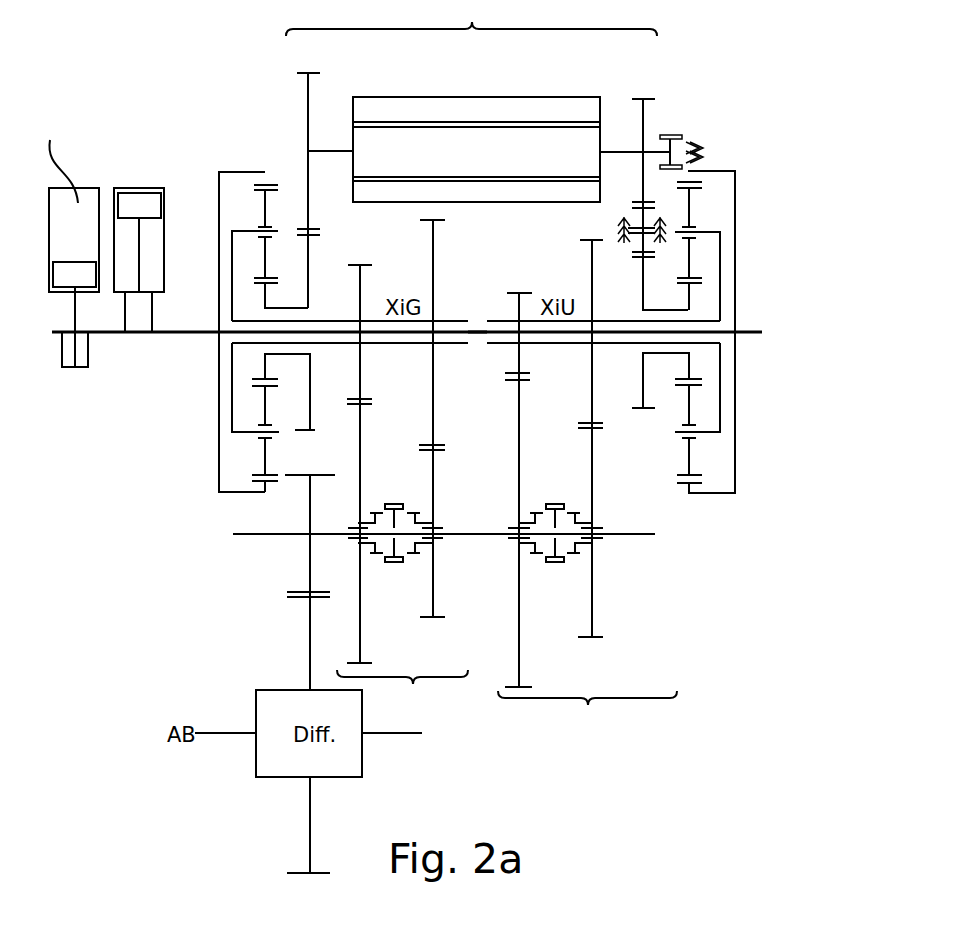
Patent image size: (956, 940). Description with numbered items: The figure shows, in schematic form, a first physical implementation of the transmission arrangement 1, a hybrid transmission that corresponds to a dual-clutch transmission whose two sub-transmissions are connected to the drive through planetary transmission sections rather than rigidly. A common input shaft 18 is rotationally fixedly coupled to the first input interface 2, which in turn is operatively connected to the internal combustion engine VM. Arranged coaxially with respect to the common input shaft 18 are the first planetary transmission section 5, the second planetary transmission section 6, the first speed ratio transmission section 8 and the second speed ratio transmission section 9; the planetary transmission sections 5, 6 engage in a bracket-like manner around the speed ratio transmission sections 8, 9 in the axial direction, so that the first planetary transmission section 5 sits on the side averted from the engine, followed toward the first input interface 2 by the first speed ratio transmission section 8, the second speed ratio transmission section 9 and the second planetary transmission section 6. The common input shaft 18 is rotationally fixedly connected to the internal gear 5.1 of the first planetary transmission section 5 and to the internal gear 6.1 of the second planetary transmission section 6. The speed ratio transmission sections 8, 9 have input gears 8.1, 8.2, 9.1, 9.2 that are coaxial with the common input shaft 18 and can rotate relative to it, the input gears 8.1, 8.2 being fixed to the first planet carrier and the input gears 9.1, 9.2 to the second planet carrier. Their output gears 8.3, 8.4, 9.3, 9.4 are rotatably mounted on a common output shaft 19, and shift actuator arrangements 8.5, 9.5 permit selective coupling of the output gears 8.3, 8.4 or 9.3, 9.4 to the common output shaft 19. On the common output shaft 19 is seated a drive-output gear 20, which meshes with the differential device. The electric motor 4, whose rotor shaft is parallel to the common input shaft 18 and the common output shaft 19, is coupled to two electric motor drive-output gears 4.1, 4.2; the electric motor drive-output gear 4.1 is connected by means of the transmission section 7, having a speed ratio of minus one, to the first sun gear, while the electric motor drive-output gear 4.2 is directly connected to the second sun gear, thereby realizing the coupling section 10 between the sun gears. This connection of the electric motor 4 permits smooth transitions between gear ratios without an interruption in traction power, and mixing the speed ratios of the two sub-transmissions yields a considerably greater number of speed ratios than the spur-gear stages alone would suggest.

The transmission arrangement 1 is at (86, 114).
The first input interface 2 is at (165, 334).
The electric motor 4 is at (475, 107).
The electric motor drive-output gear 4.1 is at (655, 99).
The electric motor drive-output gear 4.2 is at (320, 73).
The first planetary transmission section 5 is at (726, 307).
The internal gear 5.1 is at (737, 253).
The second planetary transmission section 6 is at (258, 285).
The internal gear 6.1 is at (219, 240).
The transmission section 7 is at (655, 203).
The first speed ratio transmission section 8 is at (593, 478).
The input gear 8.1 is at (590, 280).
The input gear 8.2 is at (517, 293).
The output gear 8.3 is at (592, 605).
The output gear 8.4 is at (518, 657).
The shift actuator arrangement 8.5 is at (585, 520).
The second speed ratio transmission section 9 is at (424, 463).
The input gear 9.1 is at (432, 247).
The input gear 9.2 is at (367, 265).
The output gear 9.3 is at (433, 590).
The output gear 9.4 is at (359, 632).
The shift actuator arrangement 9.5 is at (425, 518).
The coupling section 10 is at (514, 155).
The common input shaft 18 is at (457, 332).
The common output shaft 19 is at (640, 537).
The drive-output gear 20 is at (310, 508).